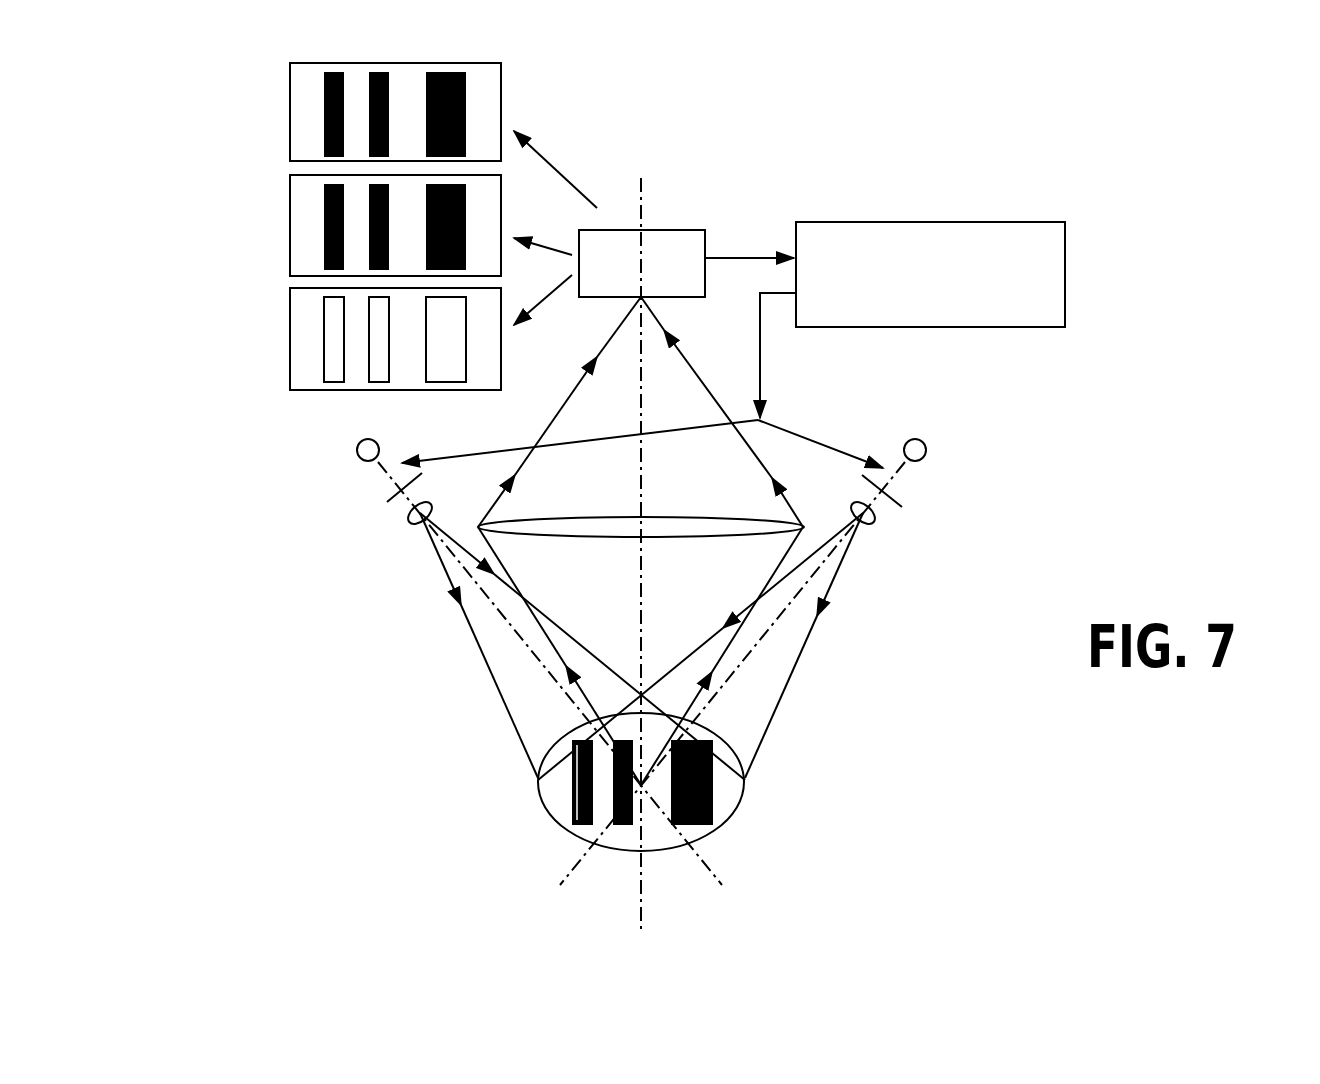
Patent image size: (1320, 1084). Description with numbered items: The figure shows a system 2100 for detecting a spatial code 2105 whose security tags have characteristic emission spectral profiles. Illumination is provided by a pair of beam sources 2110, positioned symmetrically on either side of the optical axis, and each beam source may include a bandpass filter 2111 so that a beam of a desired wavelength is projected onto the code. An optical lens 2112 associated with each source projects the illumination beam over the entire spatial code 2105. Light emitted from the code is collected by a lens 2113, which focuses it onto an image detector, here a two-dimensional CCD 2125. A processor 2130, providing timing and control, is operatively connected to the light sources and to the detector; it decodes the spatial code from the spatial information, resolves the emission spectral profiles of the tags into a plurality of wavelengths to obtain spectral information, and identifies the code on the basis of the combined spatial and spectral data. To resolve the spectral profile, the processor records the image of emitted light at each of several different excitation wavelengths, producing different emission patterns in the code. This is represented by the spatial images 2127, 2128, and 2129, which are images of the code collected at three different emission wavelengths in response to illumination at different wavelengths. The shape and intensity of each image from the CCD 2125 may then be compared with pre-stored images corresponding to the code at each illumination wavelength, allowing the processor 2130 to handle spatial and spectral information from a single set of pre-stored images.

The system 2100 is at (886, 782).
The spatial code 2105 is at (548, 812).
The beam source 2110 is at (357, 452).
The bandpass filter 2111 is at (386, 503).
The optical lens 2112 is at (418, 527).
The lens 2113 is at (585, 537).
The two-dimensional CCD 2125 is at (679, 230).
The spatial image 2127 is at (290, 110).
The spatial image 2128 is at (290, 232).
The spatial image 2129 is at (290, 344).
The processor 2130 is at (937, 222).